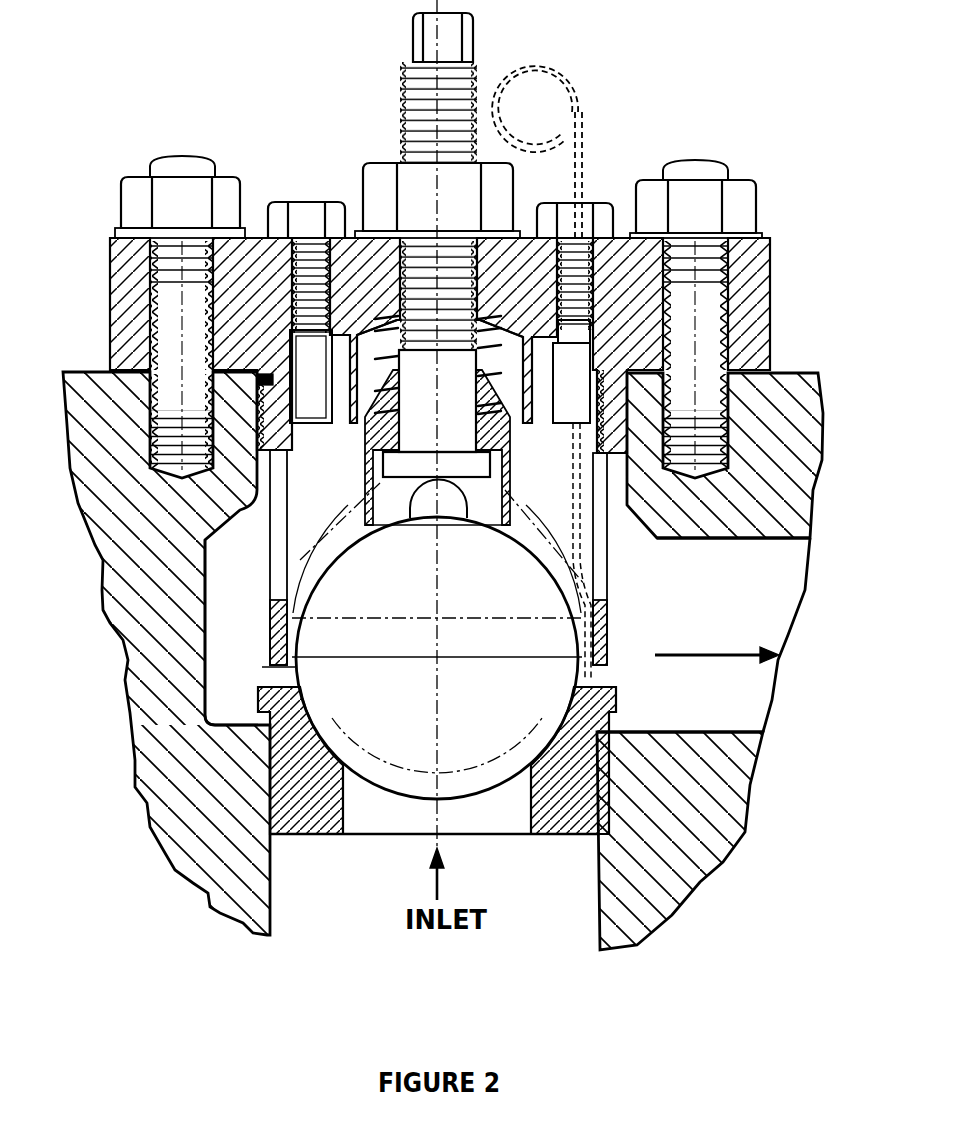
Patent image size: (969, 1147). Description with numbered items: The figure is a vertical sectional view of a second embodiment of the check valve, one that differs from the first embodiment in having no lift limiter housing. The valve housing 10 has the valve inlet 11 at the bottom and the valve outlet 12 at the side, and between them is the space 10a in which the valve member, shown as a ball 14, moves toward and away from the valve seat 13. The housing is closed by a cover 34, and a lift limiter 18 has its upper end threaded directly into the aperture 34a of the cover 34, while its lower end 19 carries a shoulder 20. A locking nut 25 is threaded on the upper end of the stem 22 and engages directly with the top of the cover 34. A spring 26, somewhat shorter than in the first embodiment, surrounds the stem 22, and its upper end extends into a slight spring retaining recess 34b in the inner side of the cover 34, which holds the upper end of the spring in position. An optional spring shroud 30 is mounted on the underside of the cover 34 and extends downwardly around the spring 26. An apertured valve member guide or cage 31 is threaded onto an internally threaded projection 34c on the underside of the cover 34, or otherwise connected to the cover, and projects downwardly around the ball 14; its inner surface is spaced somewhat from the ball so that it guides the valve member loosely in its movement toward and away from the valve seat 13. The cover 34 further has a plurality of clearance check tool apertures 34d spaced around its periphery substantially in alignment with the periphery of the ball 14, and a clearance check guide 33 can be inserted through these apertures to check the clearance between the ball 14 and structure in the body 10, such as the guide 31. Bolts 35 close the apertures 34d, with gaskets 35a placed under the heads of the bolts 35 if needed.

The valve housing 10 is at (773, 384).
The space 10a is at (222, 672).
The valve inlet 11 is at (345, 915).
The valve outlet 12 is at (718, 693).
The valve seat 13 is at (569, 823).
The ball 14 is at (410, 785).
The lift limiter 18 is at (393, 477).
The lower end 19 is at (370, 530).
The shoulder 20 is at (360, 512).
The stem 22 is at (470, 64).
The locking nut 25 is at (383, 188).
The spring 26 is at (422, 403).
The spring shroud 30 is at (515, 330).
The valve member guide or cage 31 is at (600, 568).
The clearance check guide 33 is at (543, 67).
The cover 34 is at (760, 288).
The aperture 34a is at (425, 245).
The spring retaining recess 34b is at (365, 333).
The internally threaded projection 34c is at (660, 397).
The clearance check tool apertures 34d is at (665, 246).
The bolts 35 is at (583, 217).
The gaskets 35a is at (600, 243).